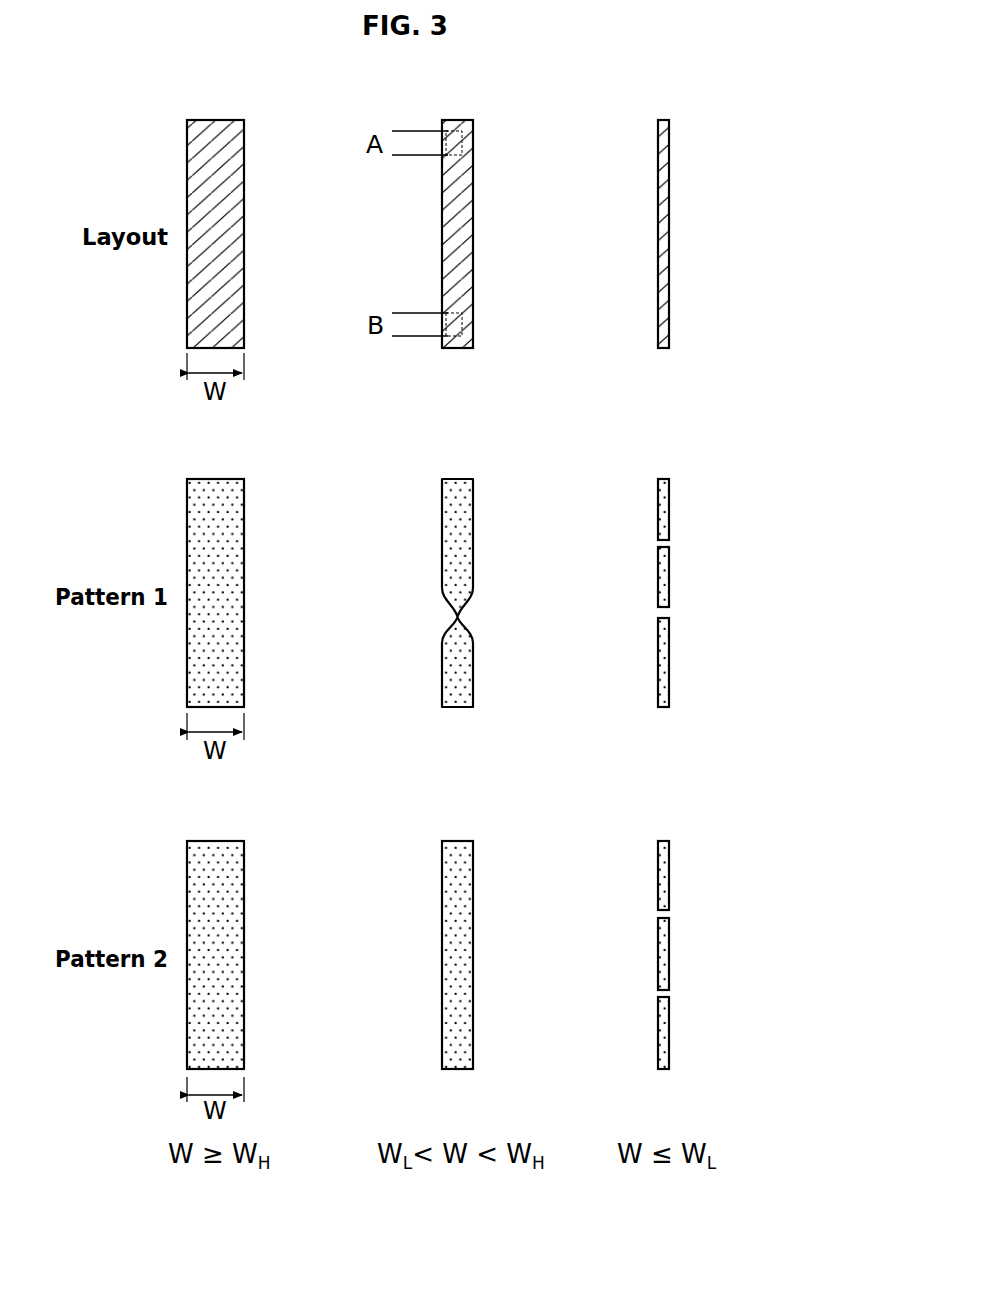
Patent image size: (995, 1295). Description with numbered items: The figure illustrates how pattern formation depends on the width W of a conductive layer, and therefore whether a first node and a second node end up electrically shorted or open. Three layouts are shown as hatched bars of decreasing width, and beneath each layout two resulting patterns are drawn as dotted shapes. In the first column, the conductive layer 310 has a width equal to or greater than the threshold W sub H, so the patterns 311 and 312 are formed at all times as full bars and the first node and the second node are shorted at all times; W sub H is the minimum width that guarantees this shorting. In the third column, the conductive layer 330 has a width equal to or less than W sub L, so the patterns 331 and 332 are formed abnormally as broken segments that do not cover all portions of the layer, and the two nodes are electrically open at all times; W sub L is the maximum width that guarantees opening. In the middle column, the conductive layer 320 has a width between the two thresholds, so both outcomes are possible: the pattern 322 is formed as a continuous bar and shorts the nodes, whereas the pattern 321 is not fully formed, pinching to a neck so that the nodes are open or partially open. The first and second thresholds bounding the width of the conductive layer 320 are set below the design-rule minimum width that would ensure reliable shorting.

The conductive layer 310 is at (217, 120).
The conductive layer 320 is at (457, 120).
The conductive layer 330 is at (662, 120).
The pattern 311 is at (217, 479).
The pattern 321 is at (457, 479).
The pattern 331 is at (662, 479).
The pattern 312 is at (217, 841).
The pattern 322 is at (457, 841).
The pattern 332 is at (662, 841).